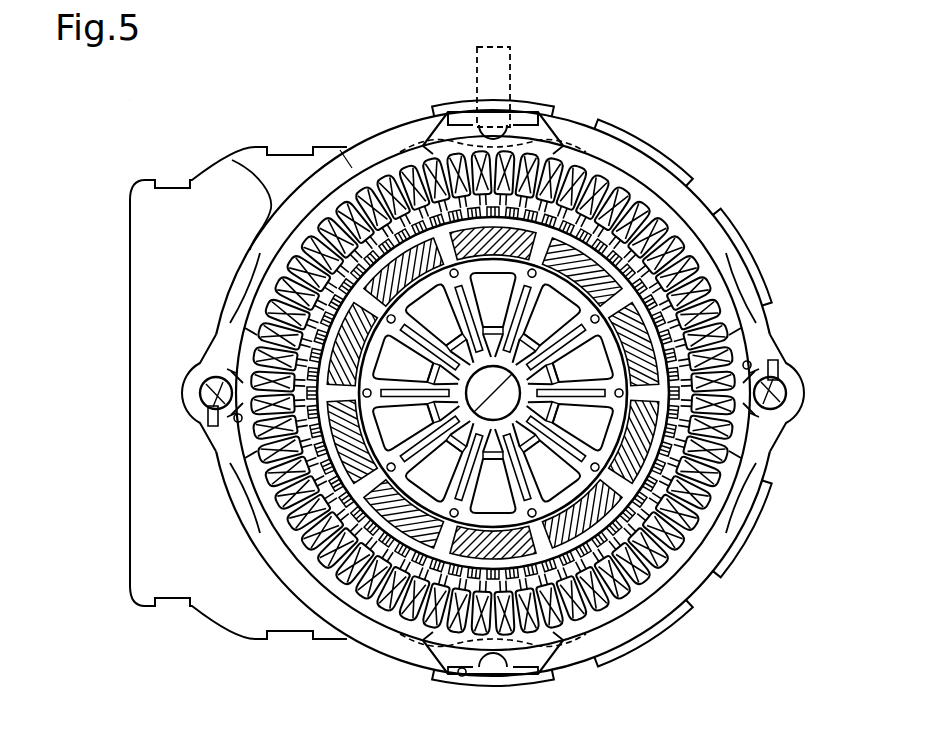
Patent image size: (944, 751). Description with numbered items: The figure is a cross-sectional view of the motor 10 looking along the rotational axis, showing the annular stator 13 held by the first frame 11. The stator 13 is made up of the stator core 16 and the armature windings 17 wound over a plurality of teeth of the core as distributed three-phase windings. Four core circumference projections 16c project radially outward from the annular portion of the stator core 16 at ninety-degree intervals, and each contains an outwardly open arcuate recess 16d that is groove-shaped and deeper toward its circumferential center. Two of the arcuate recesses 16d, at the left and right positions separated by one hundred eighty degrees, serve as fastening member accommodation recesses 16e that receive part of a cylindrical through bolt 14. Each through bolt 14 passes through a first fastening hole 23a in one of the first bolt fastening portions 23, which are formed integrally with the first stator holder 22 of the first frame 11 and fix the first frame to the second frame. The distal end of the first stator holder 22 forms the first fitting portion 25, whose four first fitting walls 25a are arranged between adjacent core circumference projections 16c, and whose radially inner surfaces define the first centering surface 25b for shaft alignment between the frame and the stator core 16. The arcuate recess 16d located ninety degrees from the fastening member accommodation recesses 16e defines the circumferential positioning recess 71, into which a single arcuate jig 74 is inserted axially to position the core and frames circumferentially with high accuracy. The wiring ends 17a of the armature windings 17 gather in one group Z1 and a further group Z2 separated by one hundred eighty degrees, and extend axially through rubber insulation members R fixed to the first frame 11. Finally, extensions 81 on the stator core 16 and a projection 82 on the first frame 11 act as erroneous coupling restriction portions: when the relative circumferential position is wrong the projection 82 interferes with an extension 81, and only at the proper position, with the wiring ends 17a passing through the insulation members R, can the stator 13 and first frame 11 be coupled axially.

The motor 10 is at (757, 84).
The first frame 11 is at (310, 153).
The stator 13 is at (352, 170).
The through bolt 14 is at (780, 380).
The stator core 16 is at (686, 586).
The core circumference projection 16c is at (524, 122).
The arcuate recess 16d is at (503, 122).
The fastening member accommodation recess 16e is at (118, 352).
The armature winding 17 is at (740, 508).
The wiring end 17a is at (430, 145).
The first stator holder 22 is at (746, 250).
The first bolt fastening portion 23 is at (782, 392).
The first fastening hole 23a is at (786, 408).
The first fitting portion 25 is at (702, 193).
The first fitting wall 25a is at (262, 180).
The first centering surface 25b is at (258, 244).
The circumferential positioning recess 71 is at (592, 58).
The jig 74 is at (476, 50).
The extension 81 is at (213, 376).
The projection 82 is at (775, 372).
The insulation member R is at (468, 124).
The one group Z1 is at (565, 128).
The further group Z2 is at (565, 655).